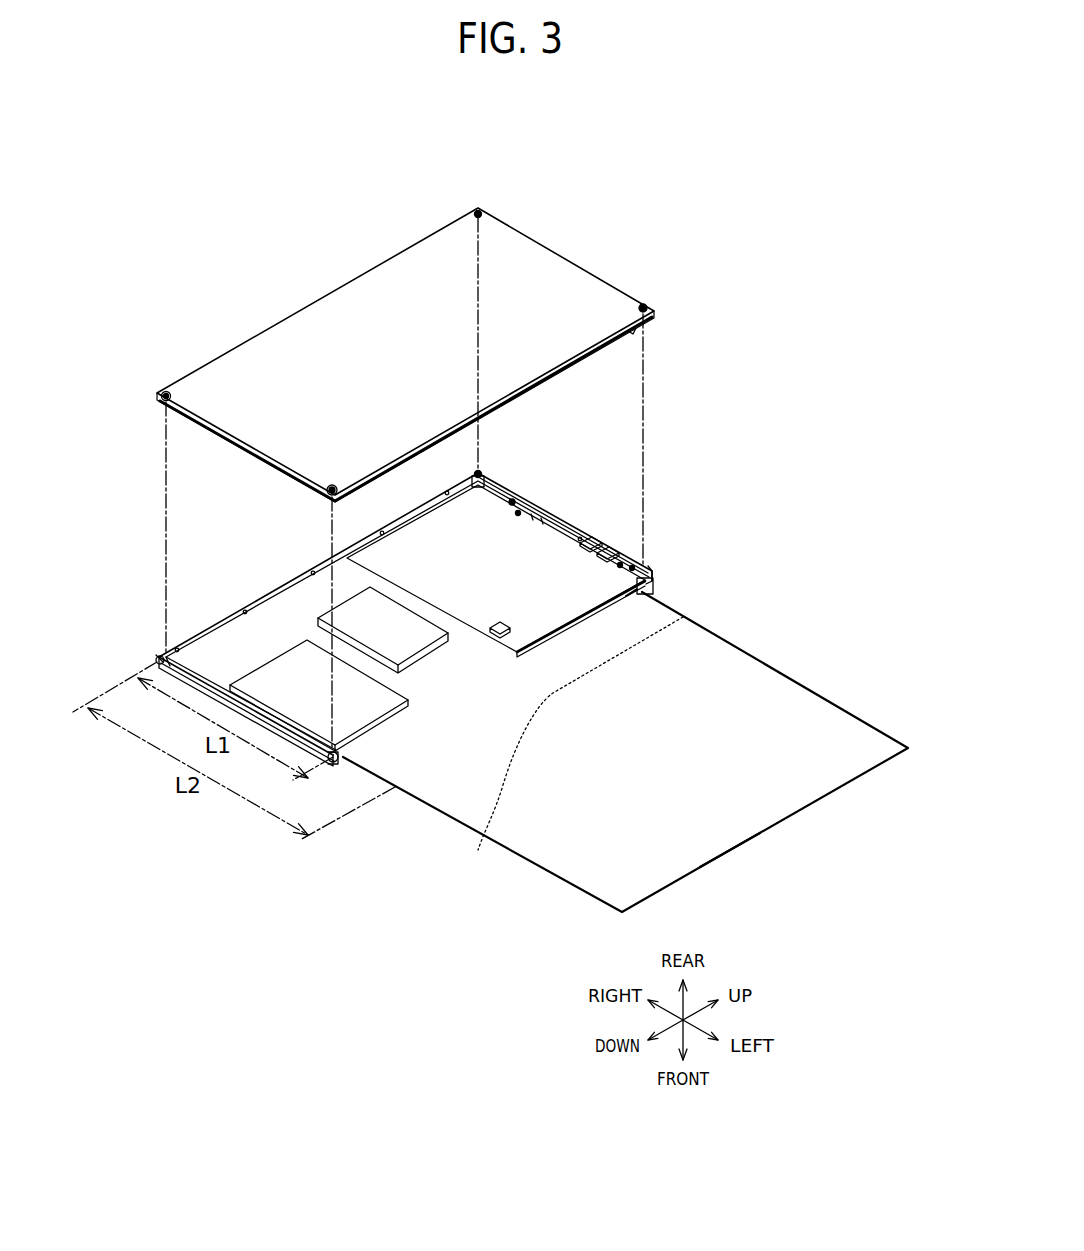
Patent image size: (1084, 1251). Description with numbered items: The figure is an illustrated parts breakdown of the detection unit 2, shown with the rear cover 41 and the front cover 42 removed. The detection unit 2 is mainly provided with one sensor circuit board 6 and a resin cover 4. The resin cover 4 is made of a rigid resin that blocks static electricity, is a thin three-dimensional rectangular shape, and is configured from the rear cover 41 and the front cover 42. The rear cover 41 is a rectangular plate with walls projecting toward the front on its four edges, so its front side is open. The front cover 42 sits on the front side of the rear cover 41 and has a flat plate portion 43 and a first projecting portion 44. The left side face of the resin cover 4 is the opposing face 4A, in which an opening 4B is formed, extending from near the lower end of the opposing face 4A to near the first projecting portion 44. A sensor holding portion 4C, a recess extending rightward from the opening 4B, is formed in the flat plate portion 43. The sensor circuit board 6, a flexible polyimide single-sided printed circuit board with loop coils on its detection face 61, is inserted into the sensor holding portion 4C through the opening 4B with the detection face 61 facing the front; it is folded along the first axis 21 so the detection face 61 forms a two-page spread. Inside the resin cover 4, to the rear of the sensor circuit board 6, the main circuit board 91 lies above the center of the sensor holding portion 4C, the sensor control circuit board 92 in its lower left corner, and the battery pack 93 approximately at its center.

The detection unit 2 is at (798, 237).
The resin cover 4 is at (572, 257).
The rear cover 41 is at (400, 352).
The front cover 42 is at (565, 520).
The flat plate portion 43 is at (285, 580).
The first projecting portion 44 is at (654, 597).
The opposing face 4A is at (648, 588).
The opening 4B is at (350, 750).
The sensor holding portion 4C is at (230, 667).
The sensor circuit board 6 is at (758, 665).
The detection face 61 is at (735, 850).
The main circuit board 91 is at (493, 570).
The sensor control circuit board 92 is at (308, 690).
The battery pack 93 is at (380, 620).
The first axis 21 is at (573, 746).